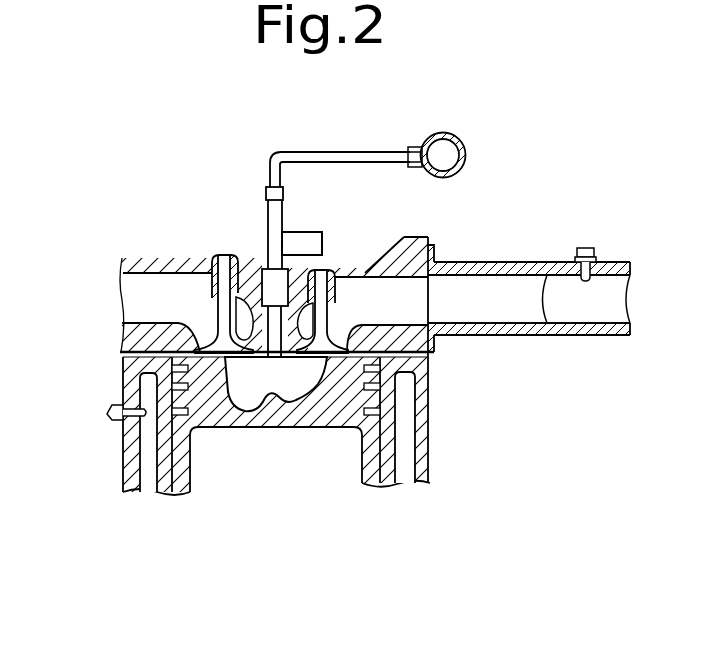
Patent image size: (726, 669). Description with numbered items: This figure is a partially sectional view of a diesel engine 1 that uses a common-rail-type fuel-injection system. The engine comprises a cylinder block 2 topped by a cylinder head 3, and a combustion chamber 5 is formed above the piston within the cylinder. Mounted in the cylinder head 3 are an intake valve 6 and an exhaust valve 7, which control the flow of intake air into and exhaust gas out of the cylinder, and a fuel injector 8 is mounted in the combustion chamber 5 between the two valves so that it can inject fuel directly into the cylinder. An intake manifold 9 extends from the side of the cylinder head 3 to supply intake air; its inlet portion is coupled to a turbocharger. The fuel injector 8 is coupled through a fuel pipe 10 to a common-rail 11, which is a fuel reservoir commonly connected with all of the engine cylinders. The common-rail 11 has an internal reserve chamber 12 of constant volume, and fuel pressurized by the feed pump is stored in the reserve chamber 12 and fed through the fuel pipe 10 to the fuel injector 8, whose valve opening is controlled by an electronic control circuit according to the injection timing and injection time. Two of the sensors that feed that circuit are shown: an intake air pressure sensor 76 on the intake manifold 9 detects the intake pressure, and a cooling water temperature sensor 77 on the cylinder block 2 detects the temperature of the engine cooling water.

The diesel engine 1 is at (432, 414).
The cylinder block 2 is at (420, 470).
The cylinder head 3 is at (395, 272).
The combustion chamber 5 is at (243, 387).
The intake valve 6 is at (327, 316).
The exhaust valve 7 is at (218, 325).
The fuel injector 8 is at (268, 226).
The intake manifold 9 is at (516, 334).
The fuel pipe 10 is at (338, 151).
The common-rail 11 is at (455, 133).
The reserve chamber 12 is at (447, 160).
The intake air pressure sensor 76 is at (582, 246).
The cooling water temperature sensor 77 is at (107, 413).